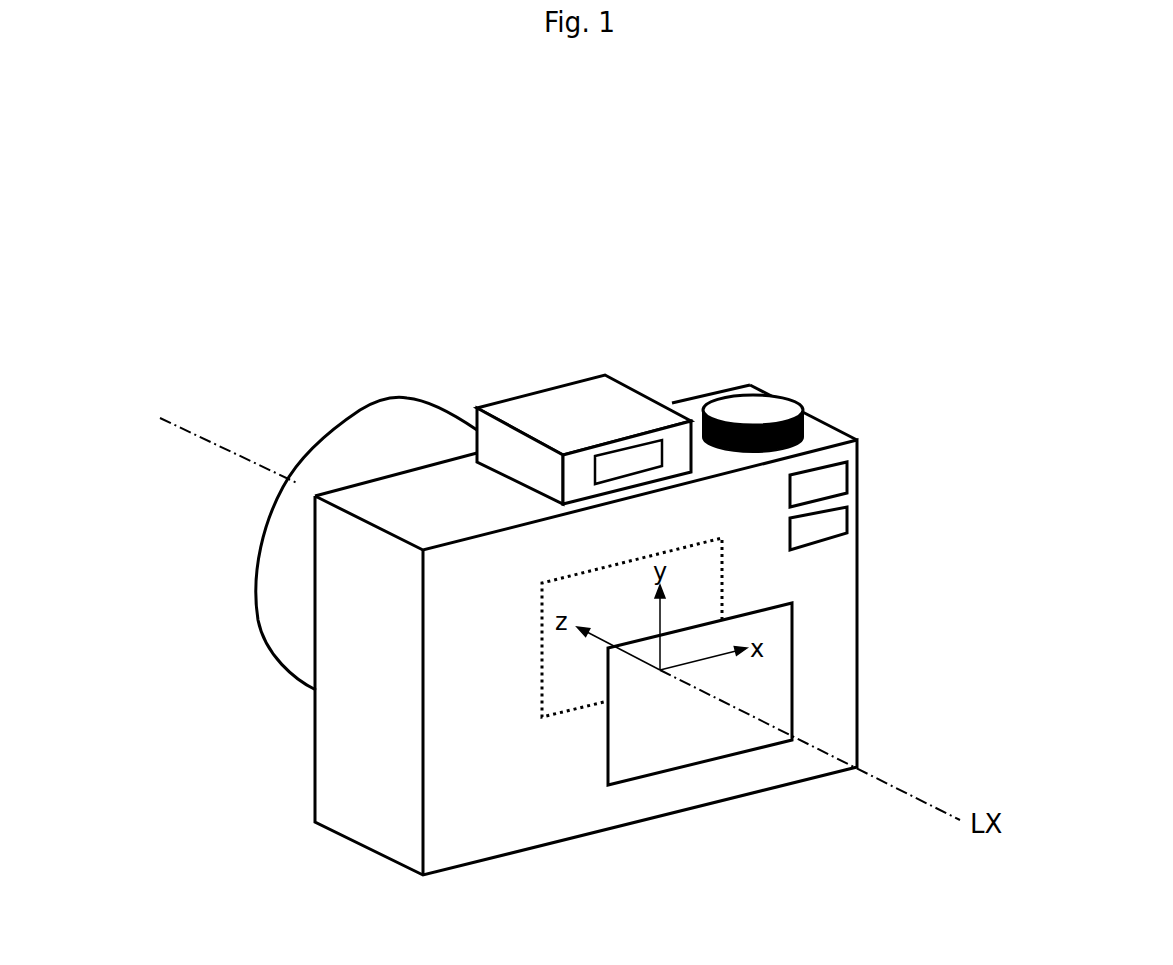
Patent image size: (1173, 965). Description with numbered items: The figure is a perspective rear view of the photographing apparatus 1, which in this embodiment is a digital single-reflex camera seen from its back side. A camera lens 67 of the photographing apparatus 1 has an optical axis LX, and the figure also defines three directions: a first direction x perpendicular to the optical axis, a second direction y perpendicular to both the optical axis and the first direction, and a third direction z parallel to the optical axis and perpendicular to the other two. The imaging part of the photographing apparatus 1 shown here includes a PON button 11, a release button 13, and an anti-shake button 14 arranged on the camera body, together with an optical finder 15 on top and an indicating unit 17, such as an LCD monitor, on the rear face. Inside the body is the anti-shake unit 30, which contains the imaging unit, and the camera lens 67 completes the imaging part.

The photographing apparatus 1 is at (748, 387).
The PON button 11 is at (848, 468).
The release button 13 is at (778, 398).
The anti-shake button 14 is at (848, 512).
The optical finder 15 is at (608, 453).
The indicating unit 17 is at (793, 622).
The anti-shake unit 30 is at (722, 538).
The camera lens 67 is at (432, 406).